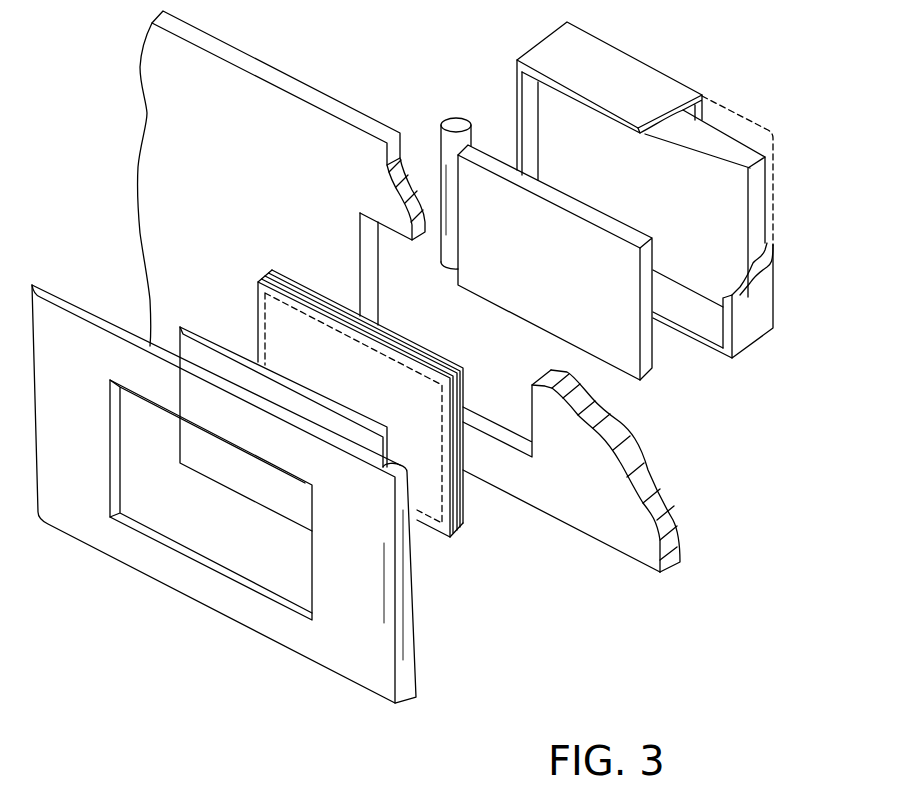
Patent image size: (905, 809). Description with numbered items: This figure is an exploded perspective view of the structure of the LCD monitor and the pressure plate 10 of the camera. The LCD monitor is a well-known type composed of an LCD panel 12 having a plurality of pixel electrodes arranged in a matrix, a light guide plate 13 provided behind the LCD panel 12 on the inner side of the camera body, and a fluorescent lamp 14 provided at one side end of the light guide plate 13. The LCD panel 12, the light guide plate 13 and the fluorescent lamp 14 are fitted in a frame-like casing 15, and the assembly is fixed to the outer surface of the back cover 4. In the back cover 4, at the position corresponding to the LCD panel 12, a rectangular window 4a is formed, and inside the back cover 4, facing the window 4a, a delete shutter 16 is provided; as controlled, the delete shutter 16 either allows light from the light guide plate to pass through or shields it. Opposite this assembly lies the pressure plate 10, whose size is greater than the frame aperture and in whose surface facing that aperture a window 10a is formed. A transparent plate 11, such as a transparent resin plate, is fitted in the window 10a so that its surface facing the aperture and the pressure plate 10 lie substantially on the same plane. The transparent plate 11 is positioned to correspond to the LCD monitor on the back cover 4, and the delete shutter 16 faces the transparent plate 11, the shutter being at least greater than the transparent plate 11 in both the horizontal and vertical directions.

The back cover 4 is at (283, 110).
The rectangular window 4a is at (483, 423).
The pressure plate 10 is at (333, 650).
The window 10a is at (212, 562).
The transparent plate 11 is at (227, 463).
The LCD panel 12 is at (733, 143).
The light guide plate 13 is at (622, 363).
The fluorescent lamp 14 is at (440, 157).
The frame-like casing 15 is at (765, 298).
The delete shutter 16 is at (427, 500).